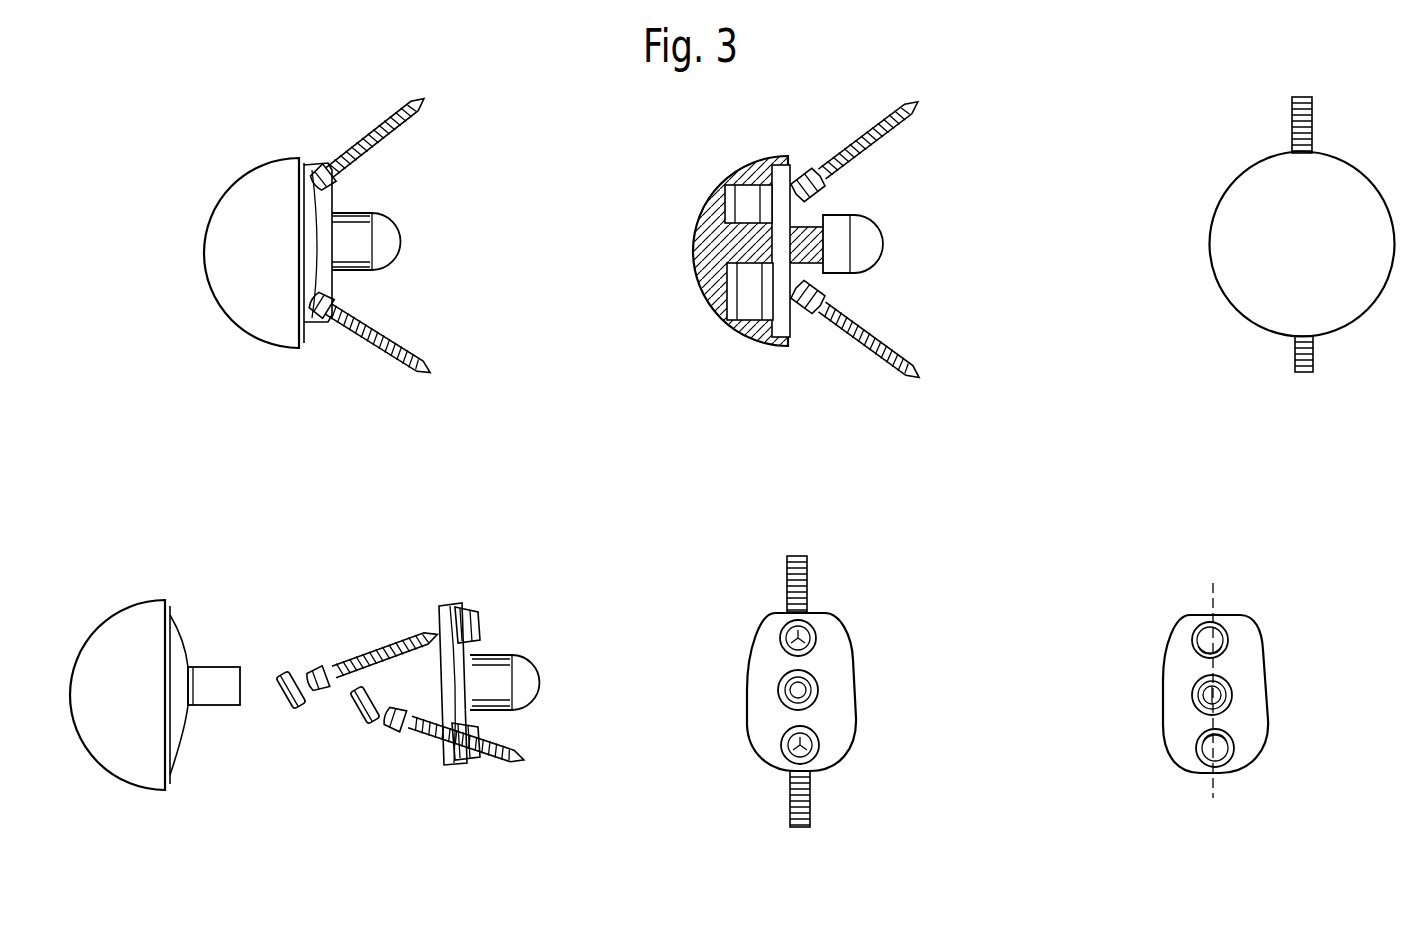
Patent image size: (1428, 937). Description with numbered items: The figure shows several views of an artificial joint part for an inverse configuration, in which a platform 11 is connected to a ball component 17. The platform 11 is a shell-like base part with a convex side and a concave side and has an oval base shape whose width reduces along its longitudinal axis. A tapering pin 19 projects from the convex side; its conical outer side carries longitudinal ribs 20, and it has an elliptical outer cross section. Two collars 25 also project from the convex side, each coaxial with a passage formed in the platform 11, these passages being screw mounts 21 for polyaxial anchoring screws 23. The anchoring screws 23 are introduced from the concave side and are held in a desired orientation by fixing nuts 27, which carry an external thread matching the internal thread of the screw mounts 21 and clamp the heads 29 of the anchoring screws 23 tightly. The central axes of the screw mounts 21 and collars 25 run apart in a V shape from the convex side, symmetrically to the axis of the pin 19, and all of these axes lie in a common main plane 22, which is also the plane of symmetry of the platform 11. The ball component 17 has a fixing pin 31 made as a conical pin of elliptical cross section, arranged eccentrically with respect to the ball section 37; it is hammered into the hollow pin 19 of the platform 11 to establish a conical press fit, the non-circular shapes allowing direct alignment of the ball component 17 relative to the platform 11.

The platform 11 is at (323, 335).
The ball component 17 is at (215, 312).
The pin 19 is at (878, 252).
The longitudinal ribs 20 is at (500, 656).
The screw mounts 21 is at (1195, 646).
The main plane 22 is at (1226, 608).
The anchoring screws 23 is at (380, 135).
The collars 25 is at (470, 614).
The fixing nuts 27 is at (282, 678).
The heads 29 is at (318, 675).
The fixing pin 31 is at (835, 238).
The ball section 37 is at (250, 205).